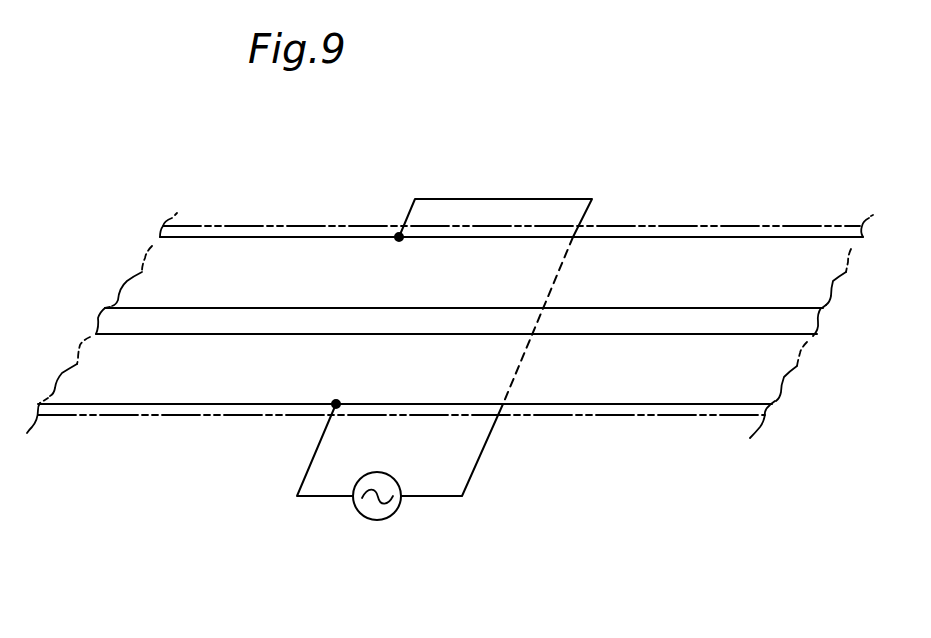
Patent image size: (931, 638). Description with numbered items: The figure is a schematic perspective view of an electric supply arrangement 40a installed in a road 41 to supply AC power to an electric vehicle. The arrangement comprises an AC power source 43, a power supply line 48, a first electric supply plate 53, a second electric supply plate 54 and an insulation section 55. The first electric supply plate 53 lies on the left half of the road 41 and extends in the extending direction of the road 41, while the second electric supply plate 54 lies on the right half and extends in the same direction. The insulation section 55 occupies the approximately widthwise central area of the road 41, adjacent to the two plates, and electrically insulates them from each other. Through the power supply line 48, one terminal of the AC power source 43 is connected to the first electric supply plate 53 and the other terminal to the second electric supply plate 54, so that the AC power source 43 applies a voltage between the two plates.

The road 41 is at (292, 227).
The second electric supply plate 54 is at (672, 253).
The insulation section 55 is at (730, 322).
The first electric supply plate 53 is at (670, 388).
The electric supply arrangement 40a is at (384, 403).
The power supply line 48 is at (470, 476).
The AC power source 43 is at (377, 521).